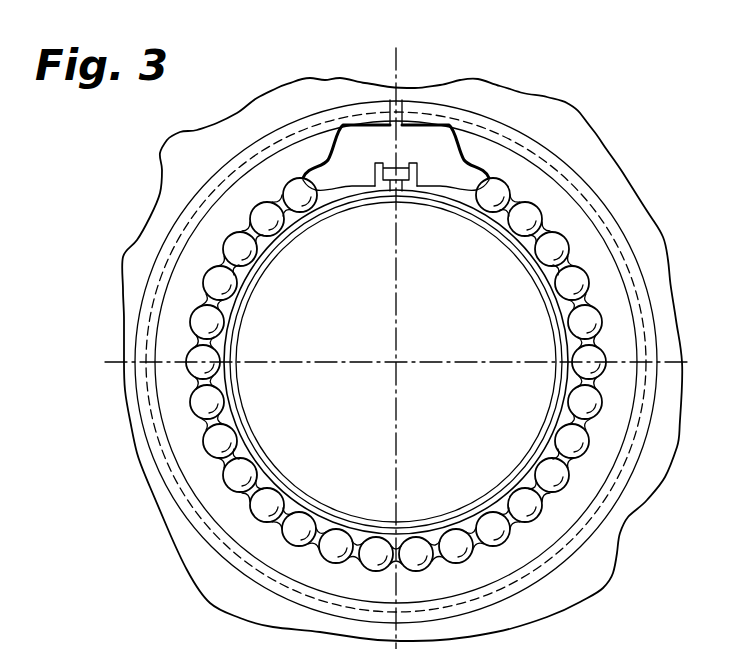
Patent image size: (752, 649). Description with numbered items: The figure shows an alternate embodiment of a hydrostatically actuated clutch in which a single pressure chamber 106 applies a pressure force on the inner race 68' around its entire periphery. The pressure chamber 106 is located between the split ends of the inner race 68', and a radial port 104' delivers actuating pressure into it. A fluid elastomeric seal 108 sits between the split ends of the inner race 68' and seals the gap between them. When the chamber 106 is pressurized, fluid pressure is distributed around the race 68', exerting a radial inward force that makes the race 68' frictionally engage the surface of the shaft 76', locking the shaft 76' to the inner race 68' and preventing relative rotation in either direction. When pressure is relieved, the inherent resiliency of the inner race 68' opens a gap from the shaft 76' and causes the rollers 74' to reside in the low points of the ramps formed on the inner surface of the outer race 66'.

The pressure chamber 106 is at (383, 115).
The radial port 104' is at (396, 106).
The fluid elastomeric seal 108 is at (409, 162).
The inner race 68' is at (396, 362).
The outer race 66' is at (404, 379).
The rollers 74' is at (396, 374).
The shaft 76' is at (396, 362).